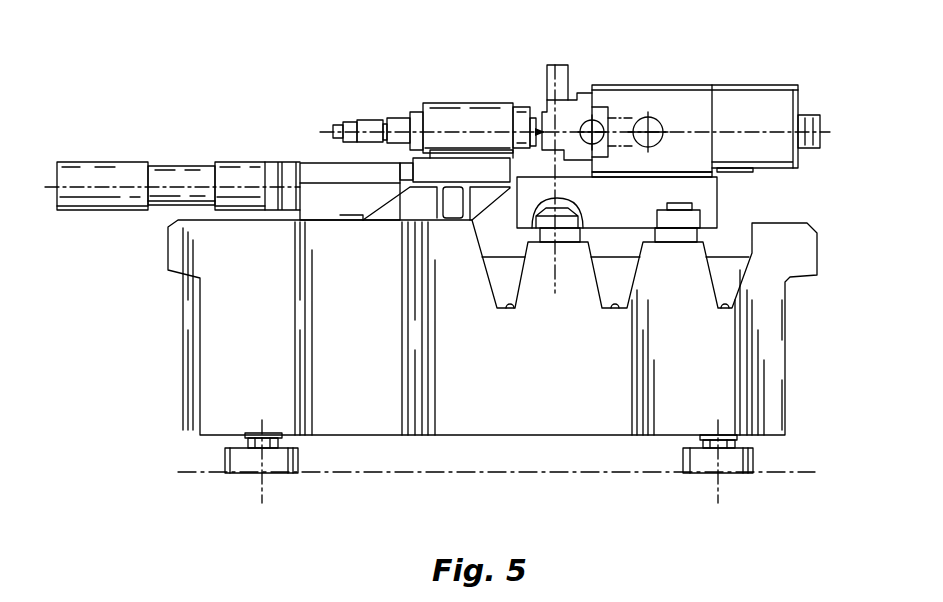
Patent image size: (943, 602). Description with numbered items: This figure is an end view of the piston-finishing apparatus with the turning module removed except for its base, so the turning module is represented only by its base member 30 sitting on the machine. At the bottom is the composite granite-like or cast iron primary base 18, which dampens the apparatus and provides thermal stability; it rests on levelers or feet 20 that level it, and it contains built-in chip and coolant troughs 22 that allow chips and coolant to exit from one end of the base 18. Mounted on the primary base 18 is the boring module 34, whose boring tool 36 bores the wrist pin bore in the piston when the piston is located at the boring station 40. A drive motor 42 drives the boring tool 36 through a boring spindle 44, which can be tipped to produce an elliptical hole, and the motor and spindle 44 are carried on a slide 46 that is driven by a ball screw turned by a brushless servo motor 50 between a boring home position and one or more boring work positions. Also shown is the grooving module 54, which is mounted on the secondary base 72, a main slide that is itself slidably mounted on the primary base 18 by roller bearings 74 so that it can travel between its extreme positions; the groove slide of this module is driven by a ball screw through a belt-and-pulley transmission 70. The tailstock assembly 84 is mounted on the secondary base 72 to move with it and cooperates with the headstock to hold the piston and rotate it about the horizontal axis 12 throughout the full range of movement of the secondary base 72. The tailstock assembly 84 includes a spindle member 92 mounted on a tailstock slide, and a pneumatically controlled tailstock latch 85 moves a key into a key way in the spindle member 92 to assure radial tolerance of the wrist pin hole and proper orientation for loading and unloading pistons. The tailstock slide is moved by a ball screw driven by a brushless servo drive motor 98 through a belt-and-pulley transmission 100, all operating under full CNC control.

The horizontal axis 12 is at (681, 93).
The primary base 18 is at (787, 382).
The feet 20 is at (295, 463).
The chip and coolant troughs 22 is at (512, 309).
The base member 30 is at (436, 168).
The boring module 34 is at (212, 147).
The boring tool 36 is at (535, 128).
The boring station 40 is at (533, 153).
The drive motor 42 is at (395, 120).
The boring spindle 44 is at (528, 118).
The slide 46 is at (465, 165).
The brushless servo motor 50 is at (247, 170).
The grooving module 54 is at (743, 82).
The belt-and-pulley transmission 70 is at (810, 113).
The secondary base 72 is at (718, 200).
The roller bearings 74 is at (662, 205).
The tailstock assembly 84 is at (618, 82).
The tailstock latch 85 is at (552, 65).
The spindle member 92 is at (555, 128).
The drive motor 98 is at (693, 122).
The belt-and-pulley transmission 100 is at (636, 110).